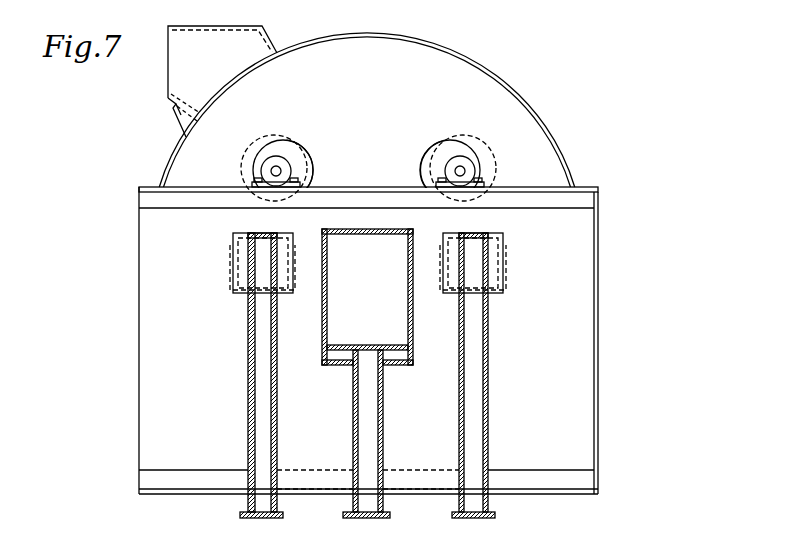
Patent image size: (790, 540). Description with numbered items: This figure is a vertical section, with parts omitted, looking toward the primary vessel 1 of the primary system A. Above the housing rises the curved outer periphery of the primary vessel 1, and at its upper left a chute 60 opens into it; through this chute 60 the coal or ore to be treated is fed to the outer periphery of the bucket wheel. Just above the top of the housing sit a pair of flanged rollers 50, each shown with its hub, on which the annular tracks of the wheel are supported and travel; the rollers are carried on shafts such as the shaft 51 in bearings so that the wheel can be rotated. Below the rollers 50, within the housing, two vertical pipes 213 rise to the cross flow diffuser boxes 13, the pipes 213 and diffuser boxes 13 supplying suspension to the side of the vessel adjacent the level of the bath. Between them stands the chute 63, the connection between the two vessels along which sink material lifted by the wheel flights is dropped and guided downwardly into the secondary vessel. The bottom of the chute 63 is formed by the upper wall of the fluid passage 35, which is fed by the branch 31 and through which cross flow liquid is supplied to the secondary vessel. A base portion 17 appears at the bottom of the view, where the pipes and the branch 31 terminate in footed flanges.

The primary vessel 1 is at (528, 99).
The primary system A is at (580, 146).
The chute 60 is at (261, 40).
The flanged rollers 50 is at (293, 156).
The shaft 51 is at (466, 169).
The cross flow diffuser box 13 is at (230, 264).
The pipes 213 is at (248, 391).
The chute 63 is at (355, 345).
The passage 35 is at (352, 356).
The branch 31 is at (383, 410).
The base 17 is at (322, 537).